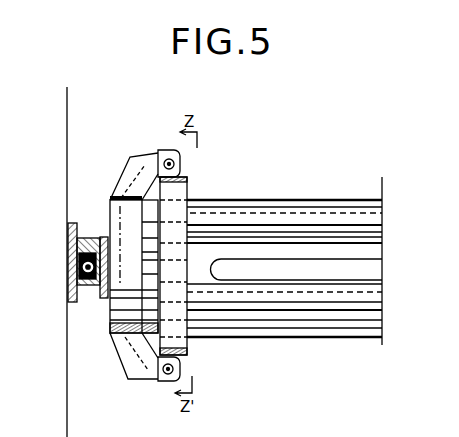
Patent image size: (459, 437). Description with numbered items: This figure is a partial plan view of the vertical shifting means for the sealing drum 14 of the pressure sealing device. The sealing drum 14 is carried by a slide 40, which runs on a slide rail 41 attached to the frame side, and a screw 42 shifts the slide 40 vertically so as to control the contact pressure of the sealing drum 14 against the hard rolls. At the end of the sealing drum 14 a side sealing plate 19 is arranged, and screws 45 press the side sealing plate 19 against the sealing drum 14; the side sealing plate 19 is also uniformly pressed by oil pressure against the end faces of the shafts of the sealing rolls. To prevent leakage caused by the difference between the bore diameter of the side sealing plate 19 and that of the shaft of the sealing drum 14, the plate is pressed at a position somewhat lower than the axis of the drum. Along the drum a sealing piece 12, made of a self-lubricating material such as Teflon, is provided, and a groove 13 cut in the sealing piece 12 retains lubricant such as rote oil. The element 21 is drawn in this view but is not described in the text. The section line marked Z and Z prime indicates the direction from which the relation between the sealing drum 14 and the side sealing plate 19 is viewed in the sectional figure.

The sealing piece 12 is at (270, 224).
The groove 13 is at (305, 233).
The sealing drum 14 is at (230, 197).
The side sealing plate 19 is at (188, 178).
The wall 21 is at (69, 161).
The slide 40 is at (108, 209).
The slide rail 41 is at (90, 288).
The screw 42 is at (72, 272).
The screws 45 is at (166, 162).